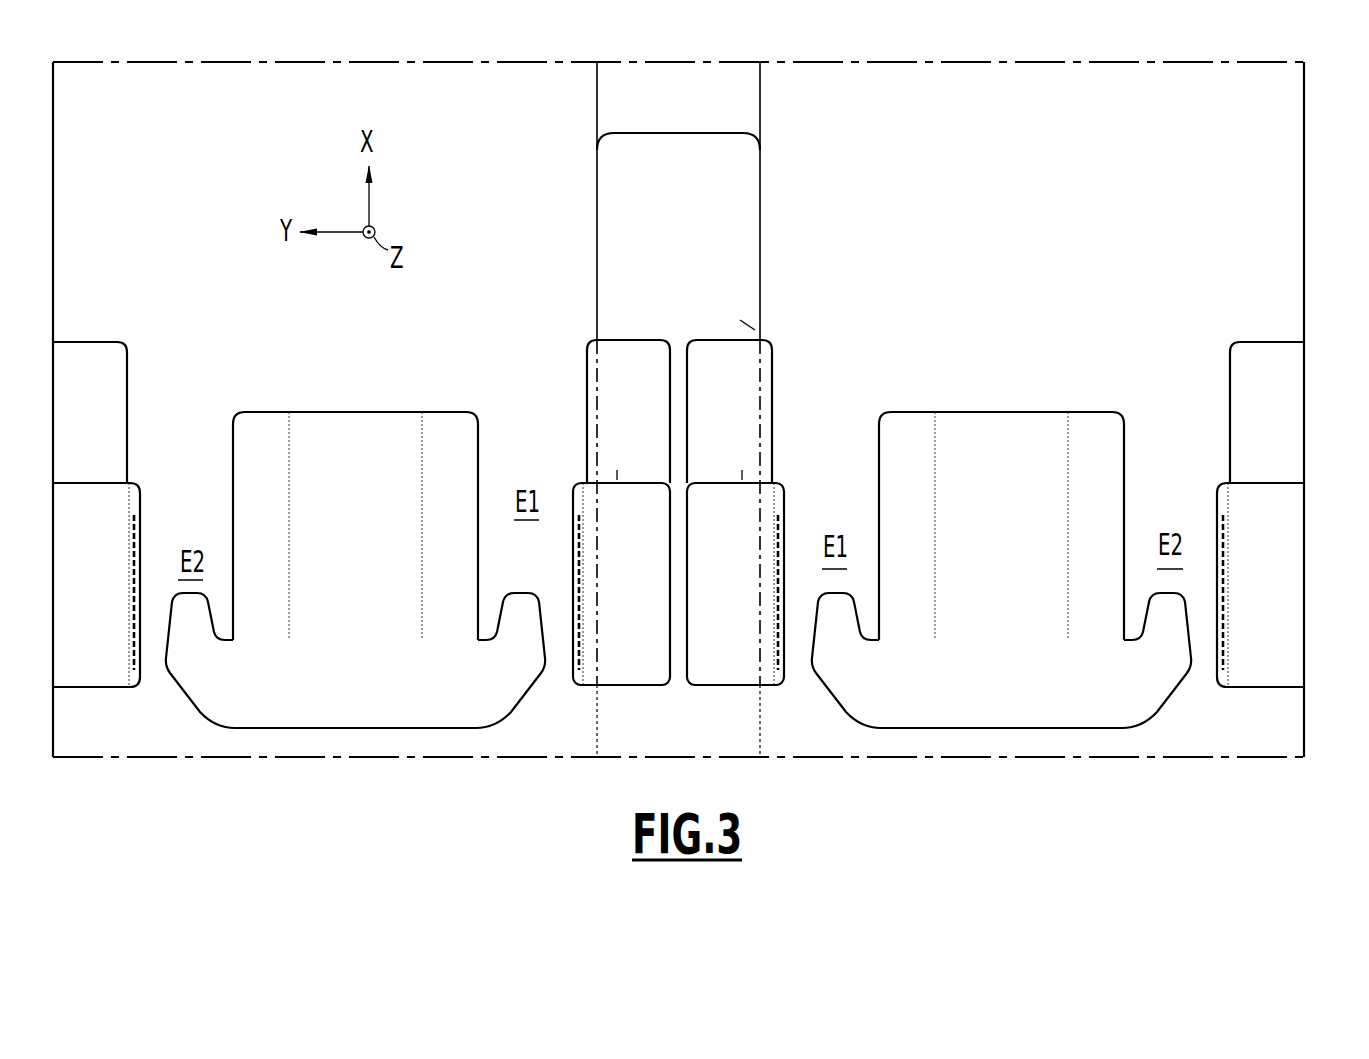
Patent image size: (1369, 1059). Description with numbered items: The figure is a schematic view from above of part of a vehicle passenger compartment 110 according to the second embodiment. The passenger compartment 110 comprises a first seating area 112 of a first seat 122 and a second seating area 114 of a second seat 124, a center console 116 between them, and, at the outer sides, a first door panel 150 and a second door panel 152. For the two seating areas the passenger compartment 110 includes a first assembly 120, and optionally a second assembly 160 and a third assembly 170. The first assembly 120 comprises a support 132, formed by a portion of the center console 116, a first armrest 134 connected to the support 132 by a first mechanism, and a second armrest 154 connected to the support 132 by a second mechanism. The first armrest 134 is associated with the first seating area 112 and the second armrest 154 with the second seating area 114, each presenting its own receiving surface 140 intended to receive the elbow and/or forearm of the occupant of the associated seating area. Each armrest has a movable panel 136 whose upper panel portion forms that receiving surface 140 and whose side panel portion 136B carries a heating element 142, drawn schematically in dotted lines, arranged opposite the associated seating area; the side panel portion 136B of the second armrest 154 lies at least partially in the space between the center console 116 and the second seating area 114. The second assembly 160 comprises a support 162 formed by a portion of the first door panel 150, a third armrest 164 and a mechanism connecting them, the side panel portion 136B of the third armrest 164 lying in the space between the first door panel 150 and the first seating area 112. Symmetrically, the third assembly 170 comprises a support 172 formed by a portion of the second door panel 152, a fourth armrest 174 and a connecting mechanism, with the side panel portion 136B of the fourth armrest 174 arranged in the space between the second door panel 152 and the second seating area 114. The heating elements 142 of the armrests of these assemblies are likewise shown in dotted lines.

The passenger compartment 110 is at (975, 205).
The first seating area 112 is at (1000, 470).
The second seating area 114 is at (352, 468).
The center console 116 is at (786, 100).
The first assembly 120 is at (577, 270).
The first seat 122 is at (1178, 705).
The second seat 124 is at (181, 703).
The support 132 is at (735, 322).
The first armrest 134 is at (742, 470).
The movable panel 136 is at (642, 520).
The side panel portion 136B is at (138, 561).
The receiving surface 140 is at (1285, 578).
The heating element 142 is at (138, 527).
The first door panel 150 is at (1300, 170).
The second door panel 152 is at (60, 192).
The second armrest 154 is at (617, 470).
The second assembly 160 is at (1210, 335).
The support 162 is at (1255, 385).
The third armrest 164 is at (1264, 690).
The third assembly 170 is at (150, 340).
The support 172 is at (83, 385).
The fourth armrest 174 is at (83, 690).